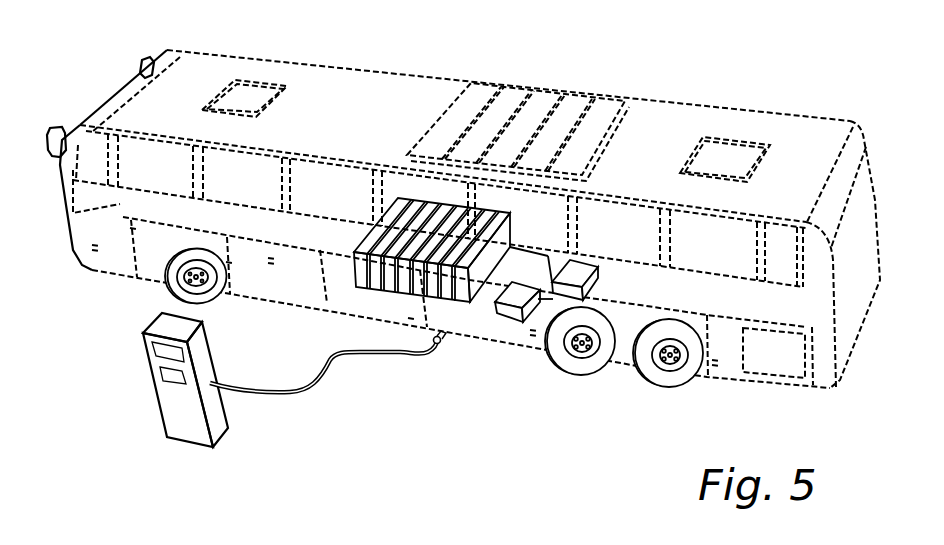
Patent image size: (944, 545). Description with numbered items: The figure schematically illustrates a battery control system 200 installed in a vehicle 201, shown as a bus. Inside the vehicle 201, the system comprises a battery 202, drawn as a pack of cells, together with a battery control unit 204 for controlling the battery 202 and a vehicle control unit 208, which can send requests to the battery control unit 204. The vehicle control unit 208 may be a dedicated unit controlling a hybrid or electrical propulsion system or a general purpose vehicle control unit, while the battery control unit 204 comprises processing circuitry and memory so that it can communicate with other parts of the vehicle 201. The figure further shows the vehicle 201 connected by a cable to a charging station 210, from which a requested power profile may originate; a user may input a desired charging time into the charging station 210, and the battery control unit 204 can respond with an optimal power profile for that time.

The battery control system 200 is at (407, 306).
The vehicle 201 is at (268, 20).
The battery 202 is at (437, 233).
The battery control unit 204 is at (508, 320).
The vehicle control unit 208 is at (573, 273).
The charging station 210 is at (183, 418).